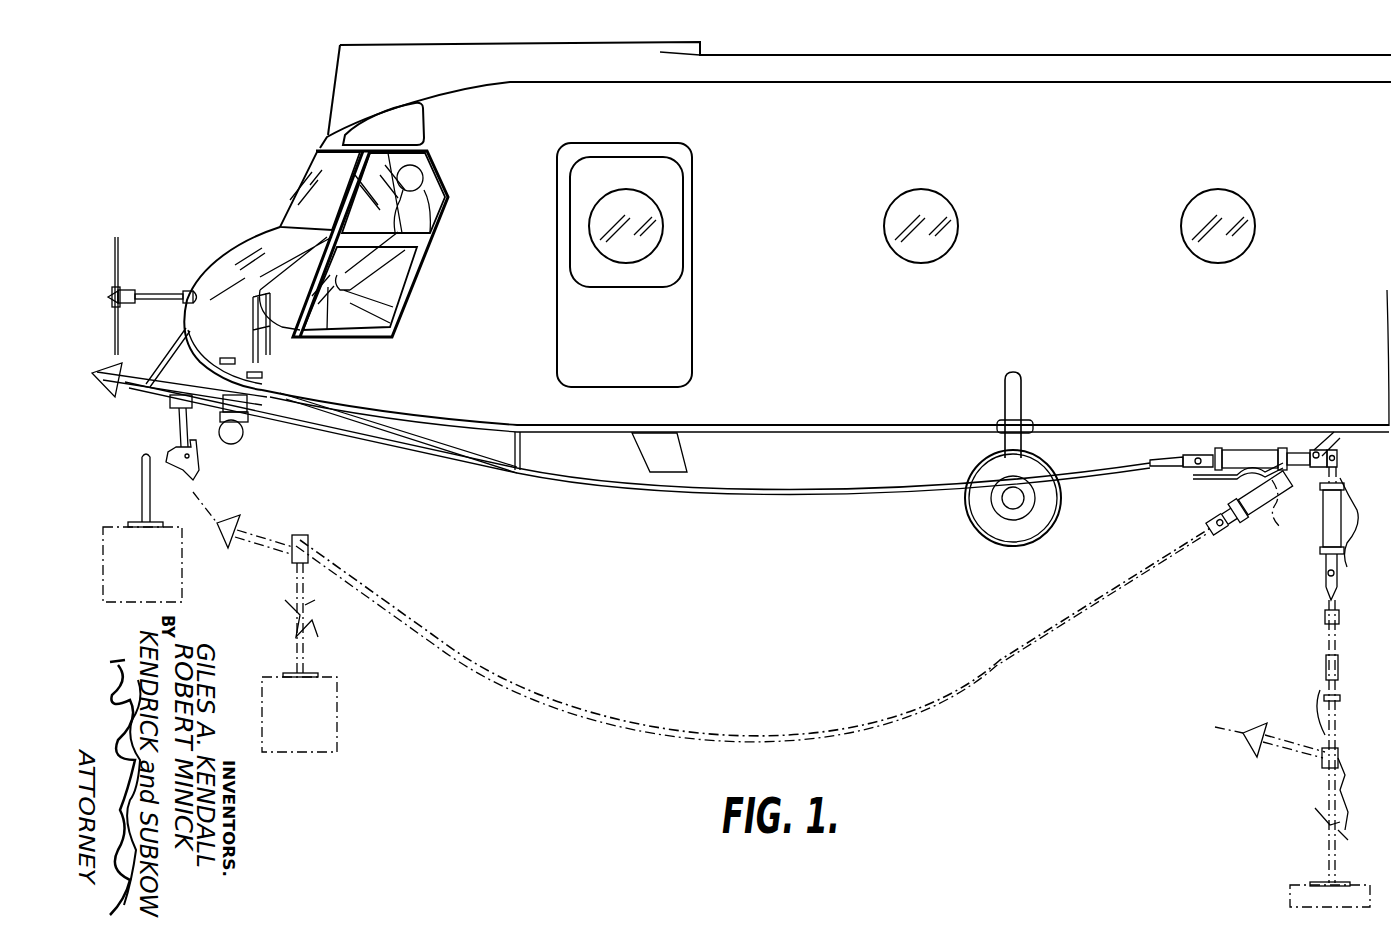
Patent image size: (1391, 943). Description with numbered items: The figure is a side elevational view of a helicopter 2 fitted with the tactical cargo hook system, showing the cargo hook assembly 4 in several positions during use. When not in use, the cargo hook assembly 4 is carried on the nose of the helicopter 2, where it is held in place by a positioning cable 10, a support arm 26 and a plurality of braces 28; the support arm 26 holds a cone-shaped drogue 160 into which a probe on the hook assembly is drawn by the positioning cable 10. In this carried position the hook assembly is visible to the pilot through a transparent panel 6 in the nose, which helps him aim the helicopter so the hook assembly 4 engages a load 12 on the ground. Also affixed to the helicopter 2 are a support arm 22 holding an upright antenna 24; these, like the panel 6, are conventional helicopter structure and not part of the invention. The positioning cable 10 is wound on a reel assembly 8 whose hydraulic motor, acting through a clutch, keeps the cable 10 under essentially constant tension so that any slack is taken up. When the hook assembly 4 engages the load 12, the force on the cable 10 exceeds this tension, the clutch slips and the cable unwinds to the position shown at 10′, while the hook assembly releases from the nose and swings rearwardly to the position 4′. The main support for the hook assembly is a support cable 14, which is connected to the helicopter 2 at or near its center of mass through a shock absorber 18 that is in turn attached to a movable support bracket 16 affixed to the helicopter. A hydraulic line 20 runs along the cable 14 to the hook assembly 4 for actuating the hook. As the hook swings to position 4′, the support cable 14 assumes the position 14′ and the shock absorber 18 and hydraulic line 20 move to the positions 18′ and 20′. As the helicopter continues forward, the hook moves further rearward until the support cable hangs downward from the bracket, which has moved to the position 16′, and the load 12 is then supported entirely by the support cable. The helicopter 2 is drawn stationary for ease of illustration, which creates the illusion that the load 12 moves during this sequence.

The helicopter 2 is at (805, 294).
The cargo hook assembly 4 is at (170, 425).
The transparent panel 6 is at (227, 298).
The reel assembly 8 is at (244, 437).
The positioning cable 10 is at (207, 432).
The load 12 is at (117, 522).
The support cable 14 is at (803, 490).
The movable support bracket 16 is at (1310, 440).
The shock absorber 18 is at (1242, 450).
The hydraulic line 20 is at (1222, 480).
The support arm 22 is at (145, 295).
The antenna 24 is at (118, 242).
The support arm 26 is at (140, 405).
The braces 28 is at (172, 350).
The cone-shaped drogue 160 is at (130, 393).
The positioning cable (unwound position) 10′ is at (212, 513).
The cargo hook assembly (released position) 4′ is at (292, 577).
The support cable (released position) 14′ is at (762, 735).
The shock absorber (released position) 18′ is at (1213, 500).
The hydraulic line (released position) 20′ is at (1275, 512).
The movable support bracket (load-bearing position) 16′ is at (1340, 447).